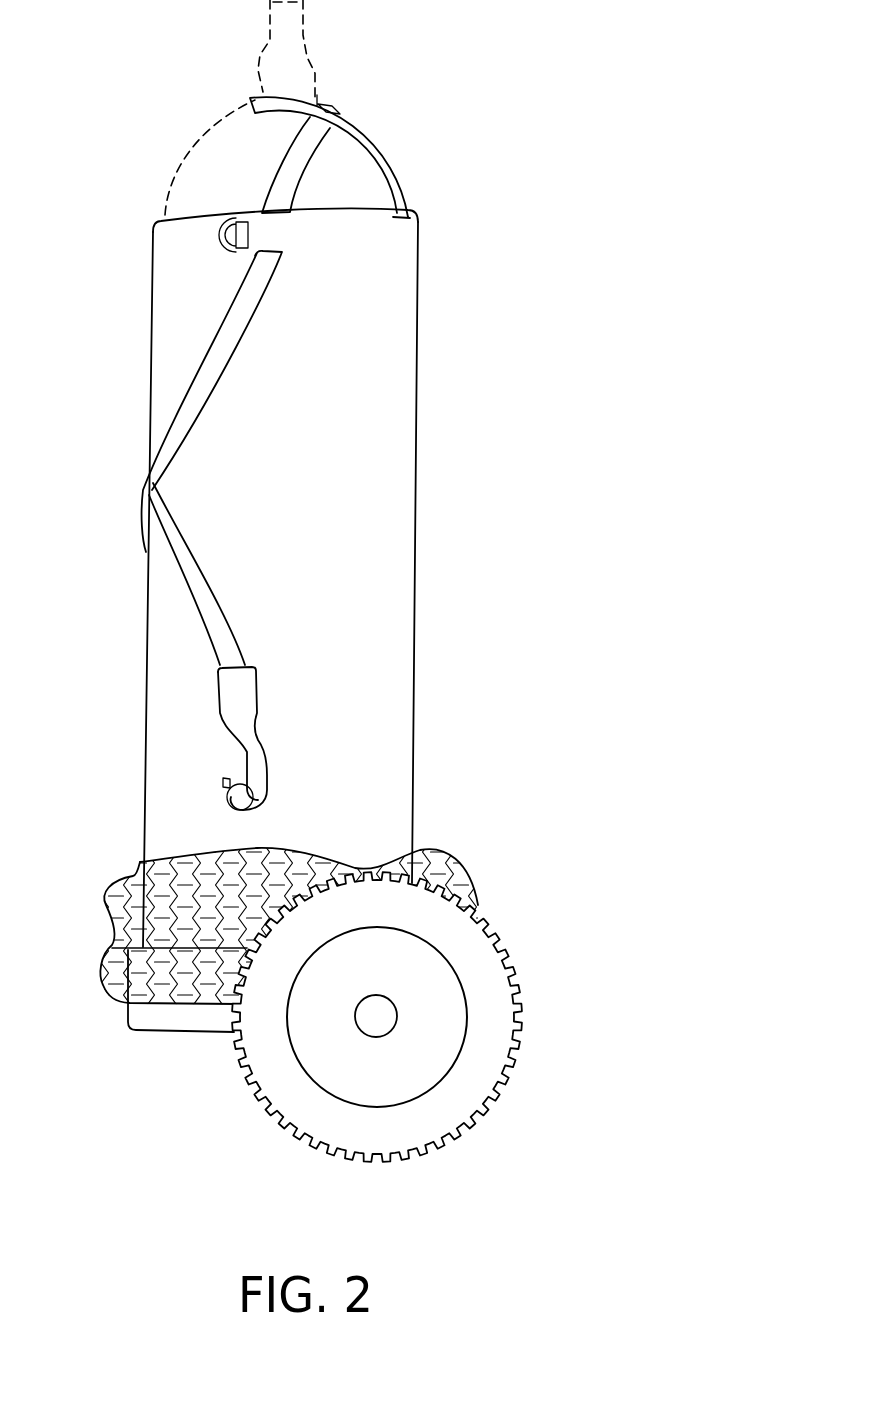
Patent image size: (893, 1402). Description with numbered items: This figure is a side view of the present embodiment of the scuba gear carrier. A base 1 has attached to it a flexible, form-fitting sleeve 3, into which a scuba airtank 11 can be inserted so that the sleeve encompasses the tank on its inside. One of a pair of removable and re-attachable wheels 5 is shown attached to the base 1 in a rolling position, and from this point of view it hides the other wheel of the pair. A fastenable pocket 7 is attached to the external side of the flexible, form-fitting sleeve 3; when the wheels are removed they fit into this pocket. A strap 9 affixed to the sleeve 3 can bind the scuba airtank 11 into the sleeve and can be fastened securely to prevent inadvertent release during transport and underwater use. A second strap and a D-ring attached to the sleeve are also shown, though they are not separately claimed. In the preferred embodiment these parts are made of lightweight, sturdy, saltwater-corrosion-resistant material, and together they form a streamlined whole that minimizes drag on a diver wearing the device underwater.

The base 1 is at (127, 1033).
The flexible, form-fitting sleeve 3 is at (150, 335).
The removable and re-attachable wheel 5 is at (520, 983).
The fastenable pocket 7 is at (113, 930).
The strap 9 is at (258, 330).
The scuba airtank 11 is at (182, 155).